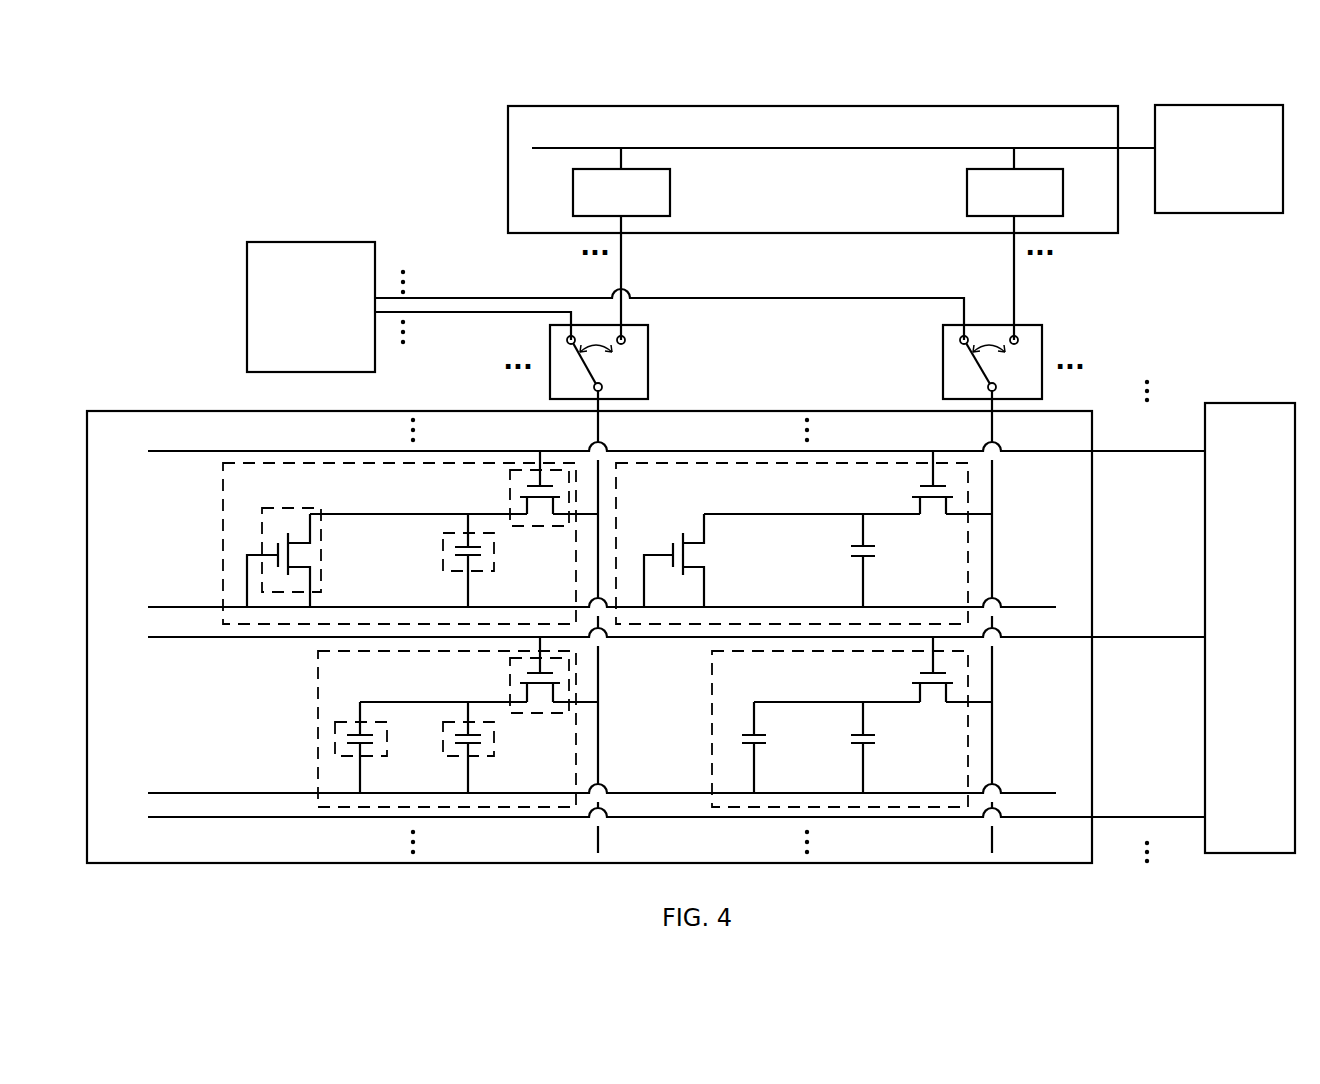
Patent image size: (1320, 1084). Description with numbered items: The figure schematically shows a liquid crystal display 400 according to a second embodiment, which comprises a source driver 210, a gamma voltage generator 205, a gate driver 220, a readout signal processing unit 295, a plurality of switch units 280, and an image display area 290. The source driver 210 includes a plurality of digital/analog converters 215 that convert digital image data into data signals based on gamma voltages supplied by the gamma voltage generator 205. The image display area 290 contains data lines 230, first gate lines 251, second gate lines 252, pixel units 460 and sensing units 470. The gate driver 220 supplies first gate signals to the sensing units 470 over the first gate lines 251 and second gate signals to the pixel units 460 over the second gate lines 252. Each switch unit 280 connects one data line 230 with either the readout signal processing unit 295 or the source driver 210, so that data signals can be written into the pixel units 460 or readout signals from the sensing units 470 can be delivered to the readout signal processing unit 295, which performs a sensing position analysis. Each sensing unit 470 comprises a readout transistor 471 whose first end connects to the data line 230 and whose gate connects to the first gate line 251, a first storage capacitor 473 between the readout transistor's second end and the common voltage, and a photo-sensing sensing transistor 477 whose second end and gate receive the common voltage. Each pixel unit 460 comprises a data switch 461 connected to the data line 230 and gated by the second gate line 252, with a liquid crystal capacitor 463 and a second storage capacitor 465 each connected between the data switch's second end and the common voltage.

The liquid crystal display 400 is at (167, 135).
The source driver 210 is at (805, 169).
The digital/analog converter 215 is at (818, 192).
The gamma voltage generator 205 is at (1219, 181).
The readout signal processing unit 295 is at (605, 288).
The switch unit 280 is at (824, 359).
The gate driver 220 is at (1250, 604).
The image display area 290 is at (649, 618).
The data line 230 is at (832, 622).
The first gate line 251 is at (657, 650).
The second gate line 252 is at (657, 653).
The sensing unit 470 is at (610, 537).
The sensing transistor 477 is at (298, 539).
The readout transistor 471 is at (508, 488).
The first storage capacitor 473 is at (493, 560).
The pixel unit 460 is at (630, 722).
The data switch 461 is at (508, 675).
The second storage capacitor 465 is at (386, 747).
The liquid crystal capacitor 463 is at (494, 747).